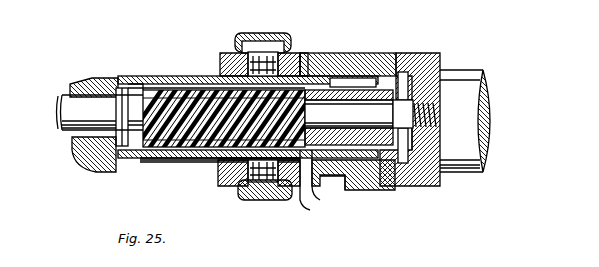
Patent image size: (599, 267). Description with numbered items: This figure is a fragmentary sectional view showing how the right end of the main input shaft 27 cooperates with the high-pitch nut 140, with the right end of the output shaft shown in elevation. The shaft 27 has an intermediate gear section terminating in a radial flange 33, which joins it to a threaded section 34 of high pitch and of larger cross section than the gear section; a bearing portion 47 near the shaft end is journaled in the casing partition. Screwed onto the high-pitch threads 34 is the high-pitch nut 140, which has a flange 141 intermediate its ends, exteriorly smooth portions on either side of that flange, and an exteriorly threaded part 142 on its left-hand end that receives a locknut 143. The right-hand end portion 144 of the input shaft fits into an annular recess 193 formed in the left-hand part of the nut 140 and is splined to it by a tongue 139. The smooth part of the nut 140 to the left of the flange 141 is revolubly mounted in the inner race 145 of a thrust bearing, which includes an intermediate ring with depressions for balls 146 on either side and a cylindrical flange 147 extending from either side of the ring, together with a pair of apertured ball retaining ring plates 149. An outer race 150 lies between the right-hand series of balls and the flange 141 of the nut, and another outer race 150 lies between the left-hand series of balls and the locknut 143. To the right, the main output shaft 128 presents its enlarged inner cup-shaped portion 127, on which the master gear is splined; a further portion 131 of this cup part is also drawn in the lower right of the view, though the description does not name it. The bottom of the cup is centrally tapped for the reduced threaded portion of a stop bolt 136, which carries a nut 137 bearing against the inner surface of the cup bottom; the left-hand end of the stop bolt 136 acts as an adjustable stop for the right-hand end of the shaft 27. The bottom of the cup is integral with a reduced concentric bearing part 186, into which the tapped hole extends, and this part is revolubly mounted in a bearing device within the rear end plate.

The shaft 27 is at (80, 110).
The radial flange 33 is at (117, 79).
The threaded section 34 is at (177, 122).
The bearing portion 47 is at (97, 152).
The cup-shaped portion 127 is at (405, 55).
The main output shaft 128 is at (404, 186).
The lower housing portion 131 is at (312, 188).
The stop bolt 136 is at (349, 117).
The nut 137 is at (399, 113).
The tongue 139 is at (343, 88).
The high-pitch nut 140 is at (212, 166).
The flange 141 is at (300, 200).
The exteriorly threaded part 142 is at (216, 77).
The nut 143 is at (218, 70).
The right-hand end portion 144 is at (143, 77).
The inner race 145 is at (282, 52).
The balls 146 is at (252, 52).
The cylindrical flange 147 is at (238, 42).
The ball retaining ring plates 149 is at (245, 186).
The outer race 150 is at (295, 60).
The bearing part 186 is at (468, 78).
The annular recess 193 is at (343, 170).